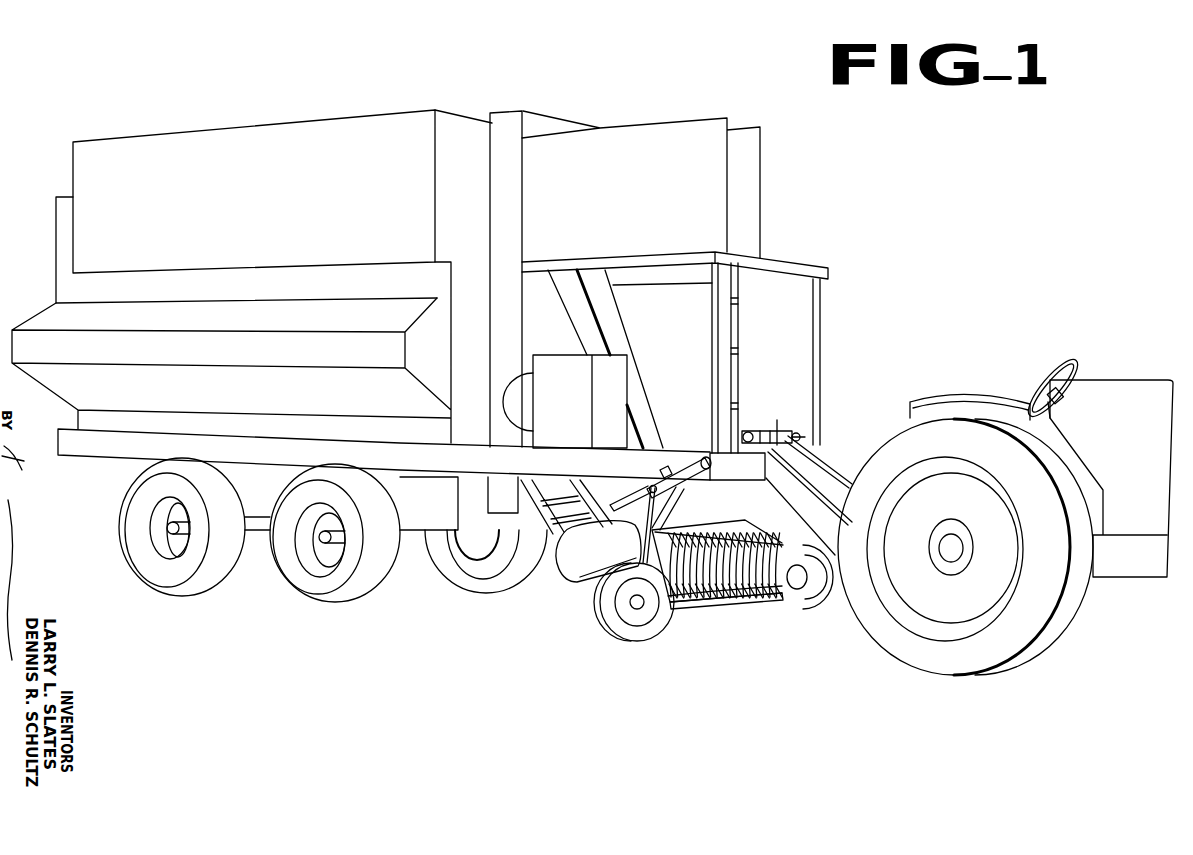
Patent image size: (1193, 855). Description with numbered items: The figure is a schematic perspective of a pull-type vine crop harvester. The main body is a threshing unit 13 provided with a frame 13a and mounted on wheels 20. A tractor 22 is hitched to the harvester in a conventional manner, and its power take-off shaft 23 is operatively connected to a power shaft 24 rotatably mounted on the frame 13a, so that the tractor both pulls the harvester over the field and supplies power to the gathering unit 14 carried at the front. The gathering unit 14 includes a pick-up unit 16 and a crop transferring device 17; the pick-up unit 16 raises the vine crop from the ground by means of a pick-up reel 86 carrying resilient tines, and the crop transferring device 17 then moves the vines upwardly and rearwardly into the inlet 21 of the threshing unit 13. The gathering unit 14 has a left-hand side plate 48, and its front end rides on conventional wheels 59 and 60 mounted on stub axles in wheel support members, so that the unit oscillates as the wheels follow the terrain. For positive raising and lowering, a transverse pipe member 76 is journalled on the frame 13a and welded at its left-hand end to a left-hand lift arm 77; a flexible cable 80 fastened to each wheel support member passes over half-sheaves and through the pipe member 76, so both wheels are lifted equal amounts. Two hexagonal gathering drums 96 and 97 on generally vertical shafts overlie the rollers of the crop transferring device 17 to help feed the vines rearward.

The threshing unit 13 is at (316, 106).
The frame 13a is at (355, 438).
The wheels 20 is at (291, 585).
The tractor 22 is at (1125, 392).
The power take-off shaft 23 is at (773, 483).
The hexagonal gathering drum 97 is at (822, 459).
The power shaft 24 is at (779, 430).
The inlet 21 is at (690, 497).
The crop transferring device 17 is at (703, 519).
The flexible cable 80 is at (666, 458).
The pipe member 76 is at (703, 458).
The left-hand lift arm 77 is at (660, 478).
The hexagonal gathering drum 96 is at (619, 509).
The left-hand side plate 48 is at (596, 565).
The wheel 59 is at (634, 634).
The pick-up reel 86 is at (700, 592).
The gathering unit 14 is at (730, 612).
The pick-up unit 16 is at (752, 606).
The wheel 60 is at (807, 597).